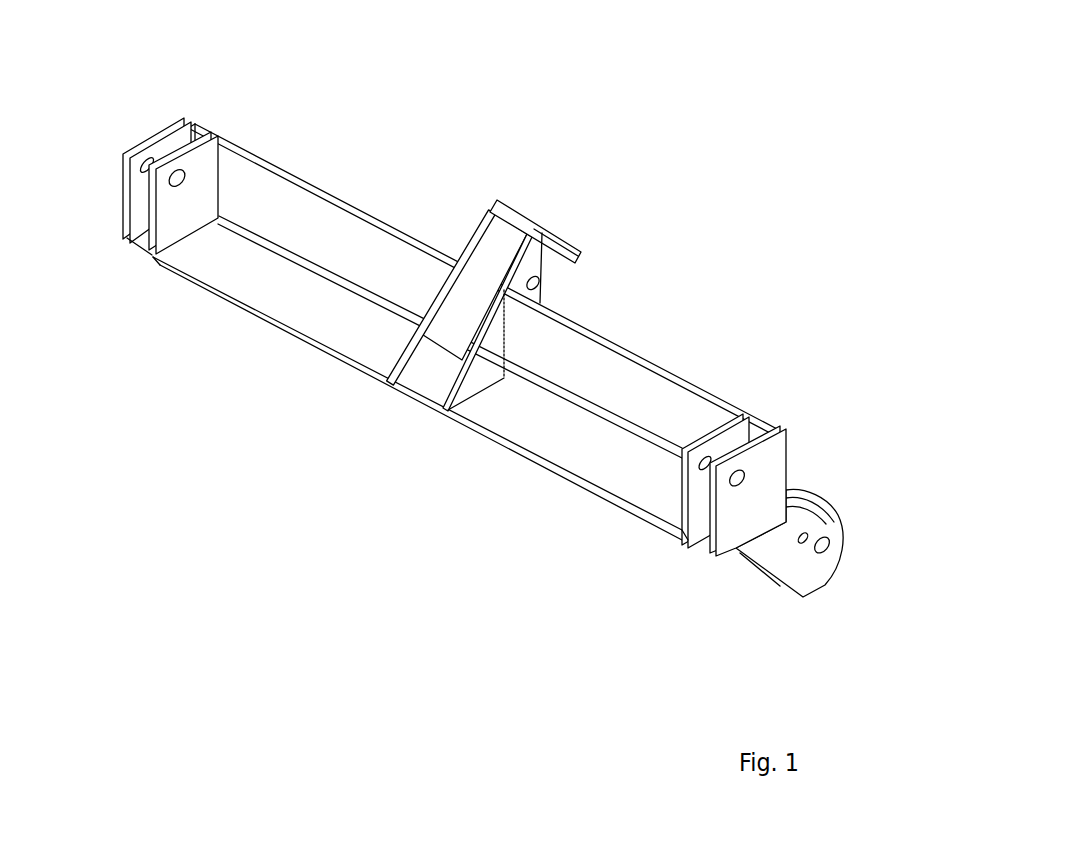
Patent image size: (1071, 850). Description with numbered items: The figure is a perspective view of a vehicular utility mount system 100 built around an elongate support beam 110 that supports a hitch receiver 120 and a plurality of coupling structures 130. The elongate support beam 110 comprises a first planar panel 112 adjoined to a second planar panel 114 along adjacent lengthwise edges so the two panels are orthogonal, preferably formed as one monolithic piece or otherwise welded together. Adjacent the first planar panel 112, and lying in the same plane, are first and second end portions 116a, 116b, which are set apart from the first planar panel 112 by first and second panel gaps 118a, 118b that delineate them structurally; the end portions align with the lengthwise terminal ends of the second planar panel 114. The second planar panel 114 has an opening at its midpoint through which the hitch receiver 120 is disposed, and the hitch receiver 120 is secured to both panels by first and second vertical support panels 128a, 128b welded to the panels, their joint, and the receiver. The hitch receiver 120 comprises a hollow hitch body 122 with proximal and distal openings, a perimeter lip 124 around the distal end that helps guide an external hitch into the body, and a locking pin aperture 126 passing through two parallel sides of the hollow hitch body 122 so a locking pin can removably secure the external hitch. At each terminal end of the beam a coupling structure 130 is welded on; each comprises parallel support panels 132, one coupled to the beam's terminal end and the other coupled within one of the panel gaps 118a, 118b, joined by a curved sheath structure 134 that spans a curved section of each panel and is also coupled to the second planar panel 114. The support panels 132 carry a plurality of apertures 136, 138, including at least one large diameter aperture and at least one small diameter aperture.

The vehicular utility mount system 100 is at (277, 660).
The elongate support beam 110 is at (466, 278).
The first planar panel 112 is at (309, 315).
The second planar panel 114 is at (377, 258).
The first end portion 116a is at (147, 254).
The second end portion 116b is at (698, 553).
The first panel gap 118a is at (150, 267).
The second panel gap 118b is at (677, 550).
The hitch receiver 120 is at (523, 310).
The hollow hitch body 122 is at (505, 240).
The perimeter lip 124 is at (561, 246).
The locking pin aperture 126 is at (591, 275).
The first vertical support panel 128a is at (420, 358).
The second vertical support panel 128b is at (478, 378).
The coupling structure 130 is at (753, 503).
The support panels 132 is at (738, 432).
The curved sheath structure 134 is at (834, 504).
The aperture 136 is at (737, 488).
The aperture 138 is at (807, 536).